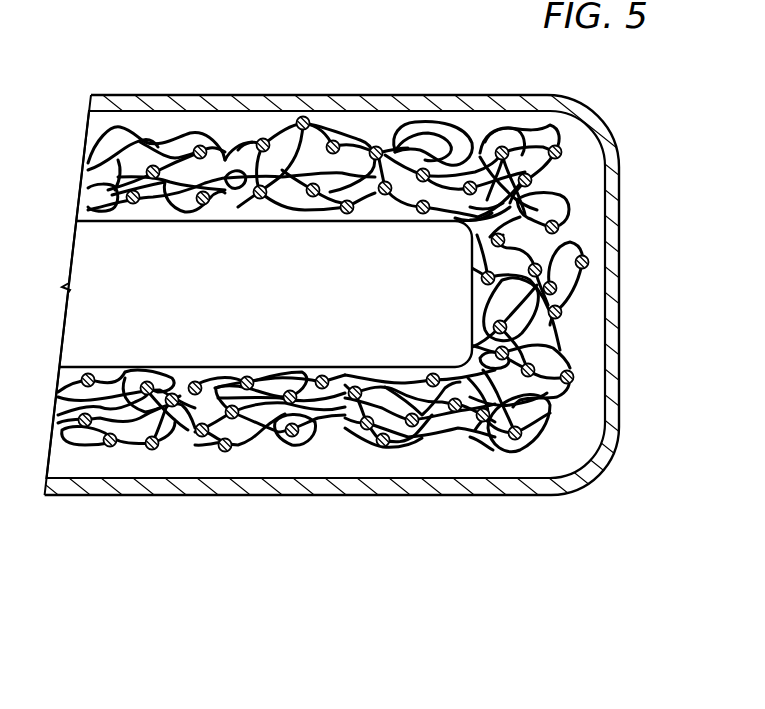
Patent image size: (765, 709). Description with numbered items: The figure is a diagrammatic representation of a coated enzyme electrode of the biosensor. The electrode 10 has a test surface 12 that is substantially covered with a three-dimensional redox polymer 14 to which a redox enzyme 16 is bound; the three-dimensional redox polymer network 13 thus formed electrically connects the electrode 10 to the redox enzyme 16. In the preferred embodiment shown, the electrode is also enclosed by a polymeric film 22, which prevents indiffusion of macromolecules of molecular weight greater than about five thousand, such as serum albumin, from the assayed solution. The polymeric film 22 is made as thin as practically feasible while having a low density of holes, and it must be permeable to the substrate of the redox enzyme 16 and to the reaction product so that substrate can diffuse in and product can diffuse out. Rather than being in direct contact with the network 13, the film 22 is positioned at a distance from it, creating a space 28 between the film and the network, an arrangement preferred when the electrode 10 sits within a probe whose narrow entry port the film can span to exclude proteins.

The electrode 10 is at (155, 342).
The test surface 12 is at (470, 237).
The three-dimensional redox polymer network 13 is at (567, 290).
The three-dimensional redox polymer 14 is at (578, 216).
The redox enzyme 16 is at (577, 380).
The polymeric film 22 is at (332, 495).
The space 28 is at (530, 467).